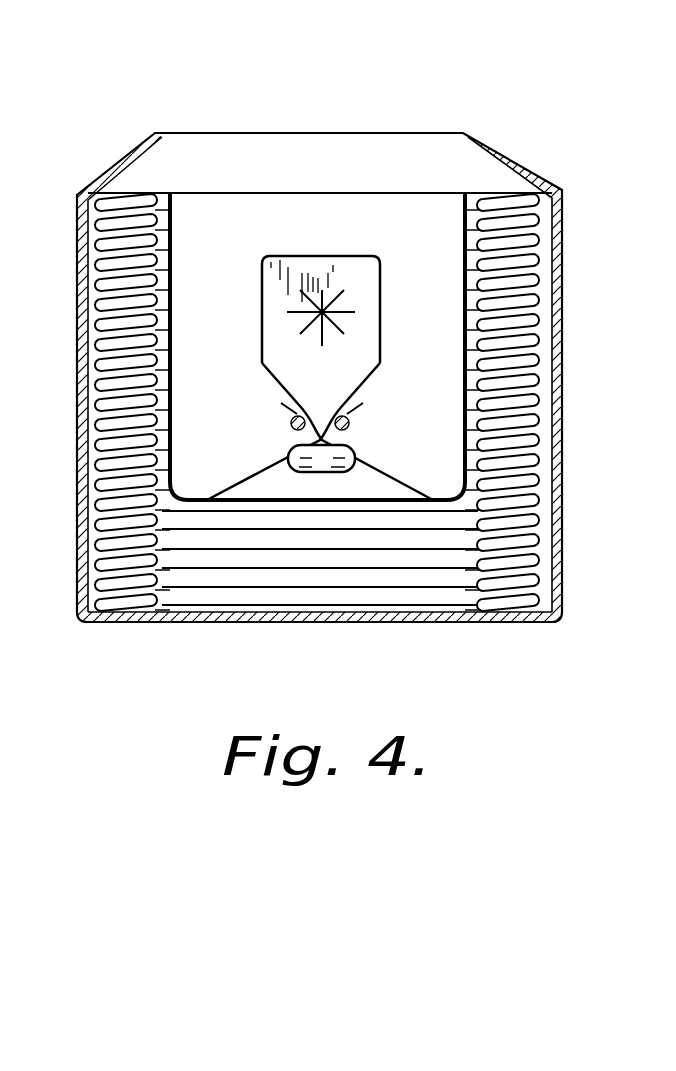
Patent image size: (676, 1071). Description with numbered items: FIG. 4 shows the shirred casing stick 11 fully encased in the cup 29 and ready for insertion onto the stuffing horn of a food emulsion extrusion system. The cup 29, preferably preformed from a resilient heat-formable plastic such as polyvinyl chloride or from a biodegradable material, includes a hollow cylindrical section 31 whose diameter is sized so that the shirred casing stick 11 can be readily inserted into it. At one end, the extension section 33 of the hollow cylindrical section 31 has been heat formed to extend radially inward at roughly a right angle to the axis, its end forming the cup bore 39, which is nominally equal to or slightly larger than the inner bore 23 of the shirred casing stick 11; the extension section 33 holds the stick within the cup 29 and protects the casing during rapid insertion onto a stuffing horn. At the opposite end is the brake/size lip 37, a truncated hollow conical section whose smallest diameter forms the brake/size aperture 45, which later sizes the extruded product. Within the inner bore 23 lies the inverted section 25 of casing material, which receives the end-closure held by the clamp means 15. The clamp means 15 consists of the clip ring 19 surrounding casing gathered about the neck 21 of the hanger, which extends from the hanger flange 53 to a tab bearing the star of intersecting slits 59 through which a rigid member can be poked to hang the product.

The shirred casing stick 11 is at (335, 368).
The clamp means 15 is at (317, 349).
The clip ring 19 is at (350, 426).
The neck 21 is at (322, 427).
The inner bore 23 is at (470, 578).
The inverted section 25 is at (463, 262).
The cup 29 is at (603, 291).
The hollow cylindrical section 31 is at (80, 432).
The extension section 33 is at (122, 620).
The brake/size lip 37 is at (525, 160).
The cup bore 39 is at (176, 612).
The brake/size aperture 45 is at (445, 134).
The hanger flange 53 is at (287, 457).
The slits 59 is at (325, 313).